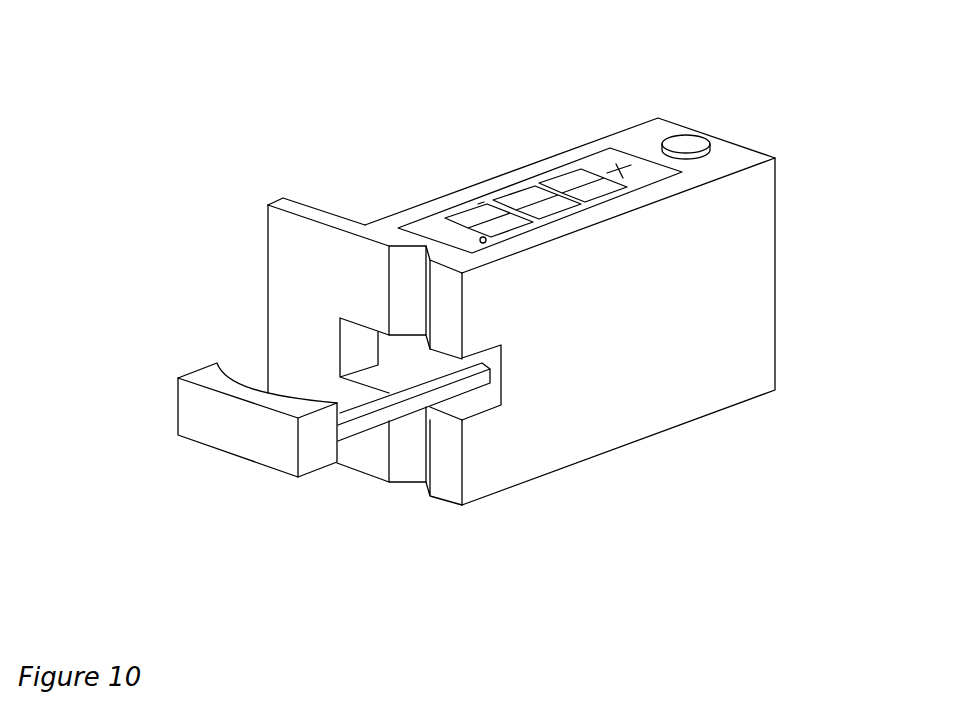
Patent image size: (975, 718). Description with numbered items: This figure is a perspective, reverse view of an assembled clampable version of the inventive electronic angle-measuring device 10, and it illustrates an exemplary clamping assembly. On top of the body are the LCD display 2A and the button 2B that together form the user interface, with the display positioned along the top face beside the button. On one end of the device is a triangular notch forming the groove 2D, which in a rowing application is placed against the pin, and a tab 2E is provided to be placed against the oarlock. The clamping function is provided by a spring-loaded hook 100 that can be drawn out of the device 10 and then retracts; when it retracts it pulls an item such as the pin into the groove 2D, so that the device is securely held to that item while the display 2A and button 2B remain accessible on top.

The device 10 is at (815, 158).
The LCD display 2A is at (497, 190).
The button 2B is at (663, 135).
The groove 2D is at (404, 496).
The tab 2E is at (285, 252).
The spring-loaded hook 100 is at (264, 440).